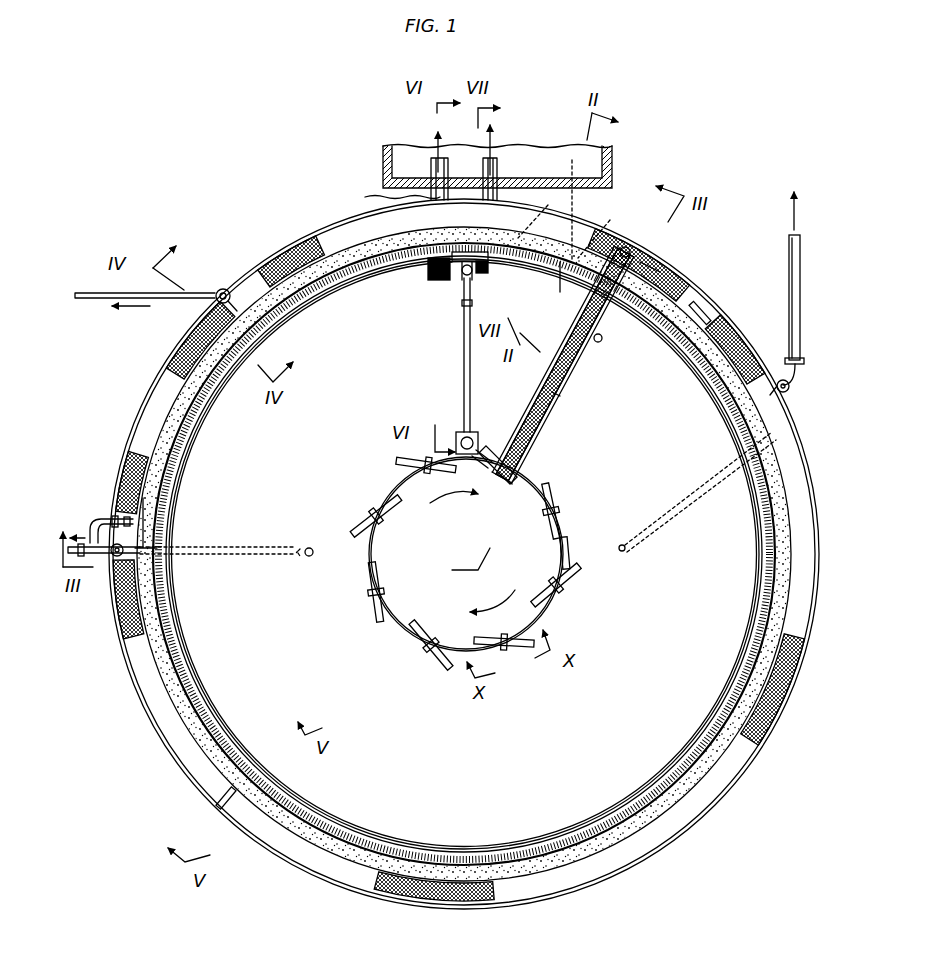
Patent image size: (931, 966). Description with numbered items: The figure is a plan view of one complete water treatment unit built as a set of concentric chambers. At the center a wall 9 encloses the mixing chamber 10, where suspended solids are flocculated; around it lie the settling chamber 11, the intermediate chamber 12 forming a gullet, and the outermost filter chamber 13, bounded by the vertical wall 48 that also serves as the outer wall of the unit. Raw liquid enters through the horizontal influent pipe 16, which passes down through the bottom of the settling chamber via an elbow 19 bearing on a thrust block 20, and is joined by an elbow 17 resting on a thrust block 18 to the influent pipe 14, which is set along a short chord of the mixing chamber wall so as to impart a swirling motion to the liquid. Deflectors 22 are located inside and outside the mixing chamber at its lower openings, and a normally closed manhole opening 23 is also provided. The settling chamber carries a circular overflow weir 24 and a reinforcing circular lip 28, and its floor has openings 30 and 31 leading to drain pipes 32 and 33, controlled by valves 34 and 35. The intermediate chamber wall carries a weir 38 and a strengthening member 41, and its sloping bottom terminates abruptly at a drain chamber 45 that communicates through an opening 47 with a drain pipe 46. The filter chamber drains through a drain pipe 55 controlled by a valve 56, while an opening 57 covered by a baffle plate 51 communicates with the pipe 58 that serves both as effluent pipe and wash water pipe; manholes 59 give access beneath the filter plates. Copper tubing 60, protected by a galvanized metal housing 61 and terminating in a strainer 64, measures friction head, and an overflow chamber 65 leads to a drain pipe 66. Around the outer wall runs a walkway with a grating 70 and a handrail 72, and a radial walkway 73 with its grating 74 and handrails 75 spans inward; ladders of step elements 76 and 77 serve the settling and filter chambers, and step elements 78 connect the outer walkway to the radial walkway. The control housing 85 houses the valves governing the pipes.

The wall 9 is at (395, 628).
The mixing chamber 10 is at (447, 554).
The settling chamber 11 is at (461, 776).
The intermediate chamber 12 is at (378, 821).
The filter chamber 13 is at (606, 822).
The influent pipe 14 is at (500, 480).
The horizontal influent pipe 16 is at (462, 382).
The elbow 17 is at (458, 432).
The thrust block 18 is at (480, 432).
The elbow 19 is at (462, 280).
The thrust block 20 is at (482, 274).
The deflectors 22 is at (400, 464).
The normally closed opening 23 is at (570, 562).
The circular overflow weir 24 is at (254, 705).
The circular lip 28 is at (242, 663).
The opening 30 is at (626, 553).
The opening 31 is at (308, 557).
The drain pipe 32 is at (690, 492).
The drain pipe 33 is at (210, 556).
The valve 34 is at (792, 390).
The valve 35 is at (113, 557).
The weir 38 is at (703, 775).
The strengthening member 41 is at (753, 648).
The drain chamber 45 is at (428, 270).
The drain pipe 46 is at (372, 194).
The opening 47 is at (430, 278).
The vertical wall 48 is at (565, 876).
The baffle plate 51 is at (540, 211).
The drain pipe 55 is at (178, 298).
The valve 56 is at (223, 289).
The opening 57 is at (490, 226).
The pipe 58 is at (495, 186).
The manholes 59 is at (703, 313).
The copper tubing 60 is at (574, 215).
The galvanized metal housing 61 is at (604, 231).
The strainer 64 is at (549, 283).
The overflow chamber 65 is at (147, 518).
The drain pipe 66 is at (95, 520).
The grating 70 is at (167, 382).
The handrail 72 is at (180, 350).
The radial walkway 73 is at (592, 368).
The grating 74 is at (518, 462).
The handrails 75 is at (553, 392).
The step elements 76 is at (602, 340).
The step elements 77 is at (660, 261).
The step elements 78 is at (630, 250).
The control housing 85 is at (612, 156).